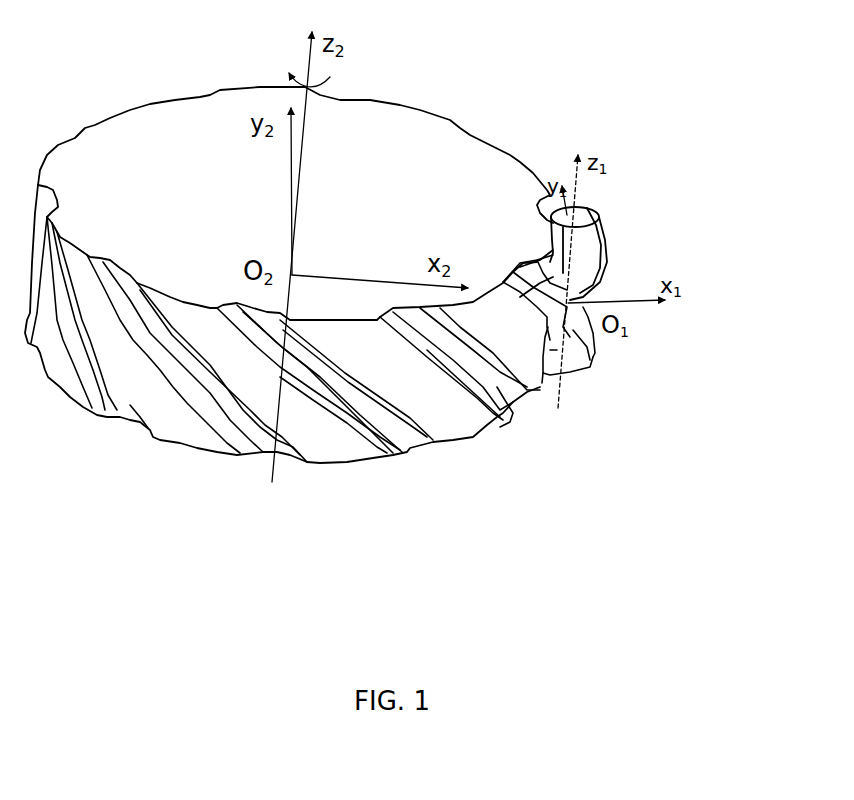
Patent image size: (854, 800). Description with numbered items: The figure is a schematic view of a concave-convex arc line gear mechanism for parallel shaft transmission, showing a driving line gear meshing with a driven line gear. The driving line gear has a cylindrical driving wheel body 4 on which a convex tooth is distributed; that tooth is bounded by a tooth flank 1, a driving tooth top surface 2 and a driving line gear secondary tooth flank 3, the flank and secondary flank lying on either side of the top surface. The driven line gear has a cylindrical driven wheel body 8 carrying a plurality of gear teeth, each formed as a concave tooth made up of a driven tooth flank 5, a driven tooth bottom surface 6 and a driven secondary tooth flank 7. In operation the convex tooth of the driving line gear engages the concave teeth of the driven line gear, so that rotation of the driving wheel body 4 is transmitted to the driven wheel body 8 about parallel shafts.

The tooth flank of driving line gear 1 is at (600, 267).
The tooth top surface of driving line gear 2 is at (593, 308).
The secondary tooth flank of driving line gear 3 is at (590, 337).
The driving wheel body 4 is at (553, 347).
The tooth flank of driven line gear 5 is at (527, 395).
The tooth bottom surface of driven line gear 6 is at (502, 423).
The secondary tooth flank of driven line gear 7 is at (440, 363).
The driven wheel body 8 is at (335, 298).